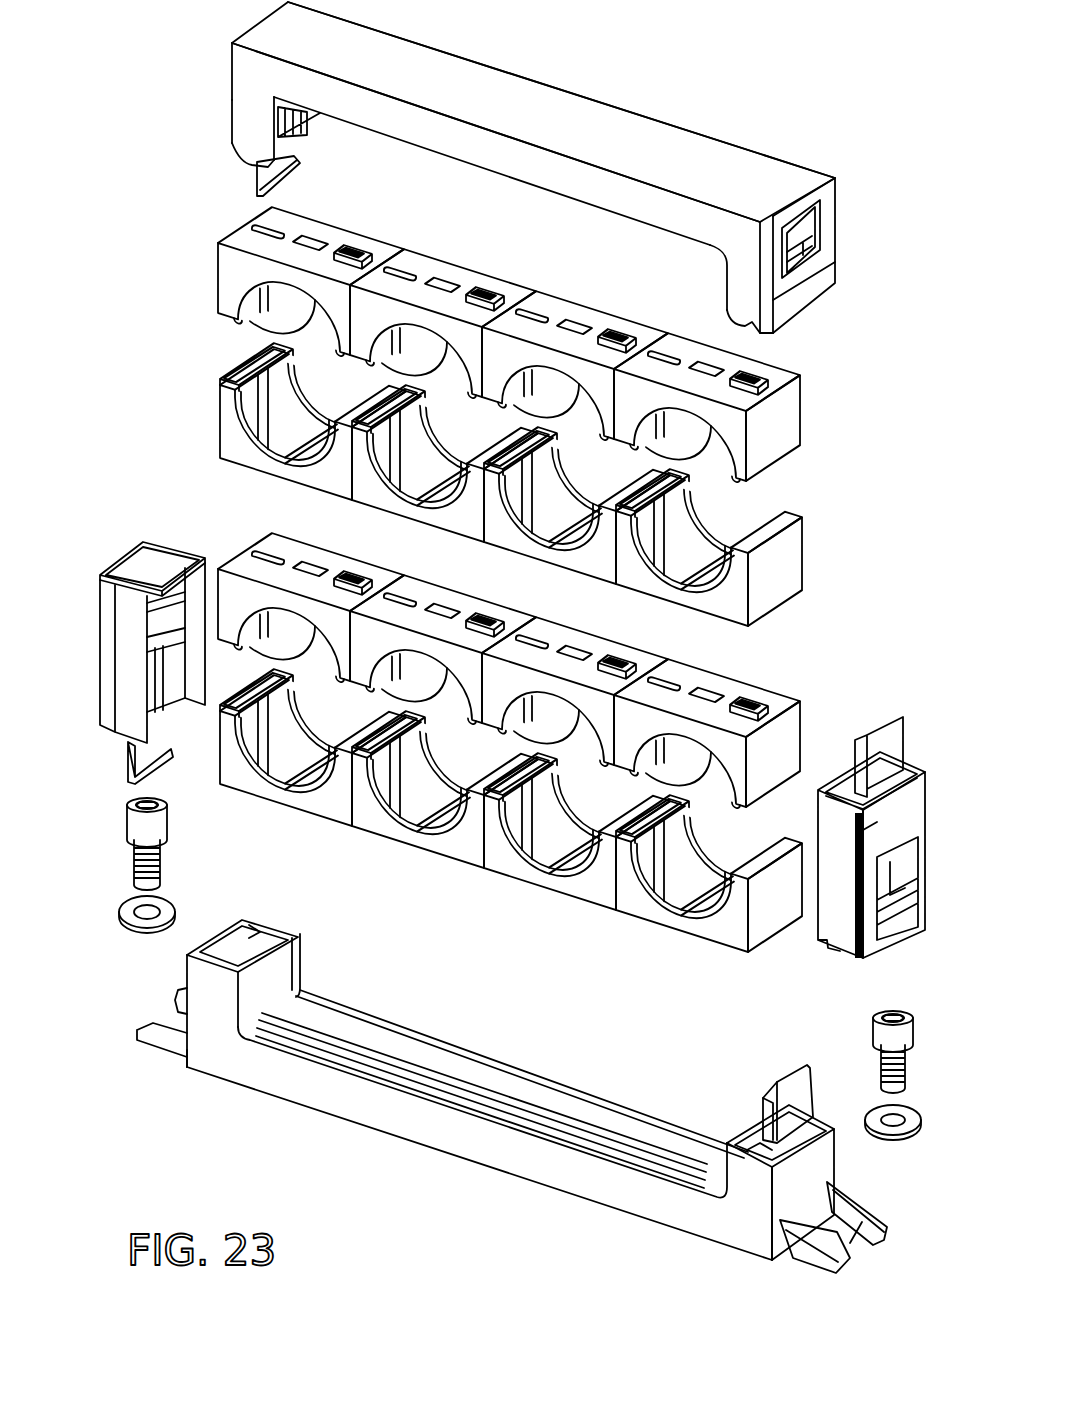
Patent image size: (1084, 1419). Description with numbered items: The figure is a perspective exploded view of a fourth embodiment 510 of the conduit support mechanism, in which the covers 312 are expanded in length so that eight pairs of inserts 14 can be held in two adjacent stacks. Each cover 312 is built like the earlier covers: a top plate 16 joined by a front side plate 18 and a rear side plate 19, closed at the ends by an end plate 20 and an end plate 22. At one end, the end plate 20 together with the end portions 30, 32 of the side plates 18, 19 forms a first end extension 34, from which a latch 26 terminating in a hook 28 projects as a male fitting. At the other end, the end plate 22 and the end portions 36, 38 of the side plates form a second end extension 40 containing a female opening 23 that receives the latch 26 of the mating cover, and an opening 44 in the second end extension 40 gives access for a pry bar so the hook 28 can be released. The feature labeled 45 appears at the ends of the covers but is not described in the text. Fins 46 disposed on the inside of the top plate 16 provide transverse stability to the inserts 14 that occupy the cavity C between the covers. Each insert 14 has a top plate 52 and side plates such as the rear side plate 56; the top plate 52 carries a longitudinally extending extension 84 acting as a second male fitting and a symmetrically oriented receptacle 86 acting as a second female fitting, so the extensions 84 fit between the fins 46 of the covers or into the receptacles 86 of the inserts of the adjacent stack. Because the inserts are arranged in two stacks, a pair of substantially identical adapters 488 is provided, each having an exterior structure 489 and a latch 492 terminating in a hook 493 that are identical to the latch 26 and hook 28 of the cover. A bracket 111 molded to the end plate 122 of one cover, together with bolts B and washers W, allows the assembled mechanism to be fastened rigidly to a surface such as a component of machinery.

The embodiment 510 is at (818, 133).
The top plate 16 is at (556, 110).
The covers 312 is at (714, 134).
The front side plate 18 is at (512, 160).
The rear side plate 19 is at (612, 108).
The end plate 20 is at (231, 92).
The end portion of side plate 30 is at (250, 128).
The first end extension 34 is at (230, 118).
The notch 45 is at (247, 157).
The latch 26 is at (290, 153).
The hook 28 is at (292, 180).
The end portion of side plate 36 is at (738, 292).
The end portion of side plate 38 is at (838, 200).
The end plate 22 is at (803, 285).
The opening 44 is at (813, 224).
The female opening 23 is at (805, 263).
The second end extension 40 is at (787, 310).
The cavity C is at (420, 165).
The inserts 14 is at (513, 591).
The extension 84 is at (355, 248).
The receptacle 86 is at (265, 230).
The top plate 52 is at (388, 838).
The rear side plate 56 is at (325, 788).
The adapters 488 is at (513, 737).
The exterior structure 489 is at (100, 685).
The latch 492 is at (128, 758).
The hook 493 is at (168, 768).
The bolts B is at (170, 825).
The washers W is at (165, 902).
The fins 46 is at (618, 1143).
The end portion of side plate 32 is at (840, 1140).
The bracket 111 is at (163, 1055).
The end plate 122 is at (185, 1066).